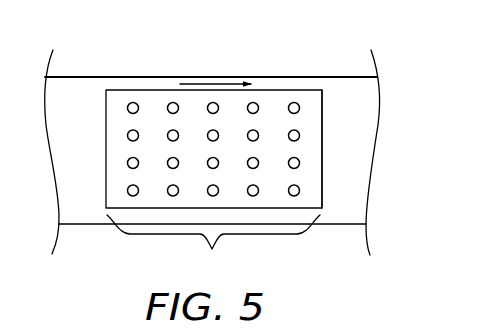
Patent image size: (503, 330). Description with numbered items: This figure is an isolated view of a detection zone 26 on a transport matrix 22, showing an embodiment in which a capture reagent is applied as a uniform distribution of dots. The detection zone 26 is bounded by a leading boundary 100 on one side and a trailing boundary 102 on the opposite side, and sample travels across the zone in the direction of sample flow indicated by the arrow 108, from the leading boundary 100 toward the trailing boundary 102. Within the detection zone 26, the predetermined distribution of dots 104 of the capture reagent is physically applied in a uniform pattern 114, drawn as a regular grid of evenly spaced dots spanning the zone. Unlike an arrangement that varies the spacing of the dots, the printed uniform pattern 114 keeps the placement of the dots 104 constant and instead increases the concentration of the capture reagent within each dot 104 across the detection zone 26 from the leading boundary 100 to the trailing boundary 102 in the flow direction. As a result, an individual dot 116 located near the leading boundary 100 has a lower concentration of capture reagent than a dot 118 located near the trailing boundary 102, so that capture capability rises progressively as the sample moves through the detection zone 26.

The transport matrix 22 is at (56, 87).
The detection zone 26 is at (282, 103).
The leading boundary 100 is at (106, 120).
The trailing boundary 102 is at (323, 143).
The dots 104 is at (132, 102).
The arrow 108 is at (213, 84).
The uniform pattern 114 is at (213, 246).
The dot 116 is at (127, 191).
The dot 118 is at (300, 189).